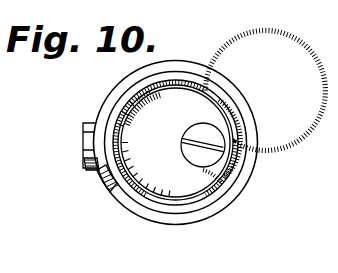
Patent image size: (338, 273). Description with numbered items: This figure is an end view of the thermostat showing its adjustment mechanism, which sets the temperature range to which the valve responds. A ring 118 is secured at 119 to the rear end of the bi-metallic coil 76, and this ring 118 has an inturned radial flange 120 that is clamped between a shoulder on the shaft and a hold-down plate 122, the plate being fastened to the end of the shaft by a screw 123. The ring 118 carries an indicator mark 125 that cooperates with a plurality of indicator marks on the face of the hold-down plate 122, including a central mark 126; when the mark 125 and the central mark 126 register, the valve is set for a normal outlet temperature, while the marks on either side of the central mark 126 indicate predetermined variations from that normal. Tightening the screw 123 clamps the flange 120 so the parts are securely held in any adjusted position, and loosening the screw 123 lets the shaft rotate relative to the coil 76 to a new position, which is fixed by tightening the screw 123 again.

The bi-metallic coil 76 is at (118, 101).
The ring 118 is at (223, 187).
The securing point 119 is at (81, 155).
The inturned radial flange 120 is at (99, 169).
The hold-down plate 122 is at (188, 105).
The screw 123 is at (220, 131).
The indicator mark 125 is at (108, 192).
The central mark 126 is at (142, 184).